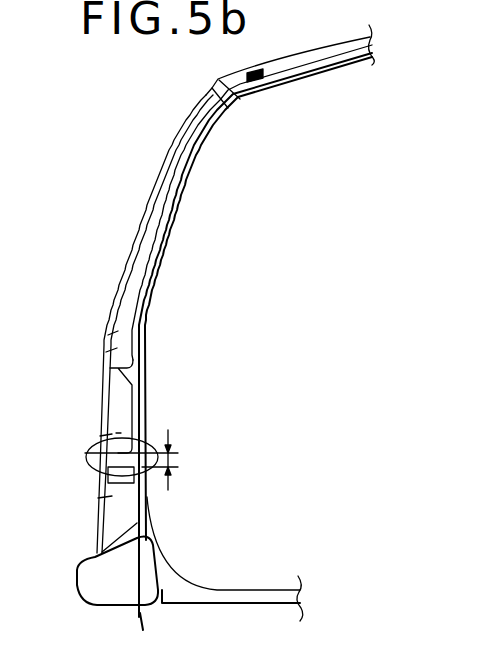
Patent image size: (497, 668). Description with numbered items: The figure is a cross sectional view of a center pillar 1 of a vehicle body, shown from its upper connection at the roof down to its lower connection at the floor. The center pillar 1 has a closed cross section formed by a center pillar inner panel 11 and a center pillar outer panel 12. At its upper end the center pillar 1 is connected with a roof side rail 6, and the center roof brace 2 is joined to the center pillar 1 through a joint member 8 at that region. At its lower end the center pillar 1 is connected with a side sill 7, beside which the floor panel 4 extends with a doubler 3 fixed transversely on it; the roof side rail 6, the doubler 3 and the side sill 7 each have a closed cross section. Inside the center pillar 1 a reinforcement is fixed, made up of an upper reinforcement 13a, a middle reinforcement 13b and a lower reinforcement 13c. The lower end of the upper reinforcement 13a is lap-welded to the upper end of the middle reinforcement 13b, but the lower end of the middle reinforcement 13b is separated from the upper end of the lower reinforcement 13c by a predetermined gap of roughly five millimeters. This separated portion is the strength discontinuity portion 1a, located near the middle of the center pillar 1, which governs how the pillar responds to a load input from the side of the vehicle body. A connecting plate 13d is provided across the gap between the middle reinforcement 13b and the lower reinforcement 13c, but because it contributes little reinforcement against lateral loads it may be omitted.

The center pillar 1 is at (168, 156).
The strength discontinuity portion 1a is at (146, 442).
The center roof brace 2 is at (347, 62).
The doubler 3 is at (250, 590).
The floor panel 4 is at (235, 603).
The roof side rail 6 is at (242, 103).
The side sill 7 is at (93, 605).
The joint member 8 is at (267, 80).
The center pillar inner panel 11 is at (160, 250).
The center pillar outer panel 12 is at (150, 193).
The upper reinforcement 13a is at (137, 258).
The middle reinforcement 13b is at (105, 387).
The lower reinforcement 13c is at (95, 530).
The connecting plate 13d is at (87, 455).